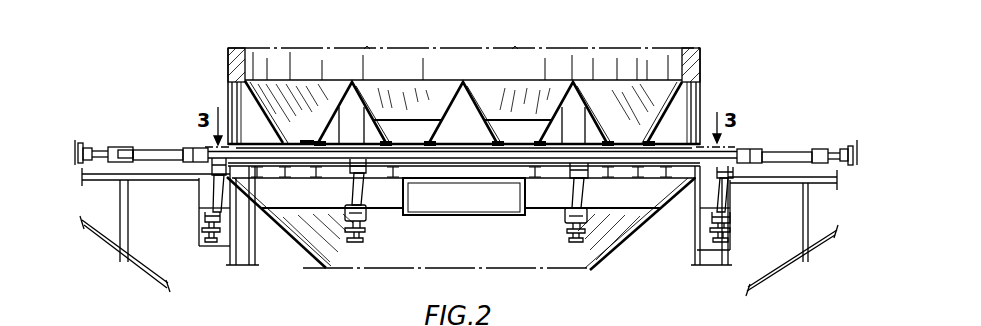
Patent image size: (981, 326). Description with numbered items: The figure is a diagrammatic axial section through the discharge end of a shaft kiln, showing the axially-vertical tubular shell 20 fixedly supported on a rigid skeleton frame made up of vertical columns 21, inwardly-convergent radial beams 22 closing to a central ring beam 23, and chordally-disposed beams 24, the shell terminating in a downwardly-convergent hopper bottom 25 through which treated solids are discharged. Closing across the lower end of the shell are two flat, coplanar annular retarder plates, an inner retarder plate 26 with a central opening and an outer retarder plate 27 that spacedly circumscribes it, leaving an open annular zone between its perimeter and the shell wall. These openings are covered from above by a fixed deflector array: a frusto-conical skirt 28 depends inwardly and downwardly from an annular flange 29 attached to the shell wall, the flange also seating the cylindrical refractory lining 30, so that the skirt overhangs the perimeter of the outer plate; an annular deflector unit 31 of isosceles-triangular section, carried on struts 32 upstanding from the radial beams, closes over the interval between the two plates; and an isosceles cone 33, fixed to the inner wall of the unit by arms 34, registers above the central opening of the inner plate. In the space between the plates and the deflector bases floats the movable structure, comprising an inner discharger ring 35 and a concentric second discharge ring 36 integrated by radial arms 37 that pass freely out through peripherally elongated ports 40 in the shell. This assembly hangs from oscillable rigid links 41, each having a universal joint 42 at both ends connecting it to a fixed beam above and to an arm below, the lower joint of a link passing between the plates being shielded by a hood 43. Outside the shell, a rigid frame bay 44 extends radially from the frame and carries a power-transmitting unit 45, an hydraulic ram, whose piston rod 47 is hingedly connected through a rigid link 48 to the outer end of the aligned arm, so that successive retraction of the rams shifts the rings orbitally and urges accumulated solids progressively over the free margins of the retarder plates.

The tubular shell 20 is at (228, 68).
The vertical columns 21 is at (230, 257).
The radial beams 22 is at (464, 176).
The central ring beam 23 is at (402, 204).
The chordally-disposed beams 24 is at (202, 236).
The hopper bottom 25 is at (293, 247).
The inner retarder plate 26 is at (411, 184).
The outer retarder plate 27 is at (265, 168).
The frusto-conical skirt 28 is at (282, 125).
The annular flange 29 is at (237, 83).
The refractory lining 30 is at (236, 48).
The annular deflector unit 31 is at (368, 119).
The struts 32 is at (360, 131).
The isosceles cone 33 is at (475, 104).
The arms 34 is at (437, 104).
The inner discharger ring 35 is at (524, 144).
The second discharge ring 36 is at (309, 140).
The arms 37 is at (405, 152).
The ports 40 is at (230, 164).
The oscillable rigid links 41 is at (214, 192).
The universal joint 42 is at (210, 166).
The hood 43 is at (366, 215).
The rigid frame bay 44 is at (115, 180).
The power-transmitting unit 45 is at (83, 143).
The piston rod 47 is at (97, 152).
The rigid link 48 is at (158, 150).